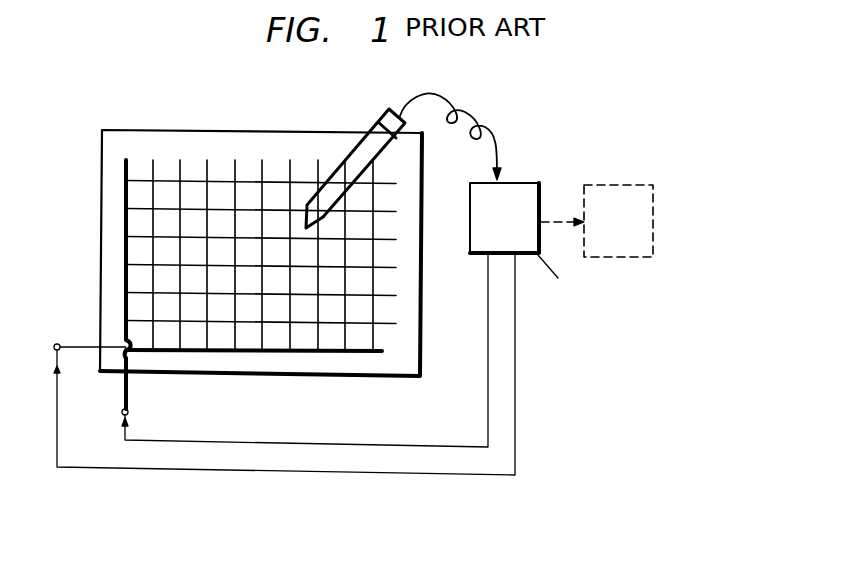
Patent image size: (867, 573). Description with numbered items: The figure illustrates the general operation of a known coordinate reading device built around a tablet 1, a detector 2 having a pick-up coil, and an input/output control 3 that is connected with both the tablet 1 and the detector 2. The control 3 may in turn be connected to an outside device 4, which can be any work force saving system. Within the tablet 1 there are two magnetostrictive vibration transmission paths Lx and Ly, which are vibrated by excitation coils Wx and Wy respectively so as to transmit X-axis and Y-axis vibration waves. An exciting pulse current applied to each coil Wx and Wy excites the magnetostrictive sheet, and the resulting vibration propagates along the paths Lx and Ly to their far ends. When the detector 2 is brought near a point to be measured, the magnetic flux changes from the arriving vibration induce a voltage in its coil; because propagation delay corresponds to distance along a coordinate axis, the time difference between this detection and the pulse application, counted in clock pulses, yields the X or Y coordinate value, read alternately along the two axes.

The tablet 1 is at (256, 250).
The detector 2 is at (380, 123).
The input/output control 3 is at (523, 190).
The outside device 4 is at (624, 192).
The magnetostrictive vibration transmission path Lx is at (388, 323).
The magnetostrictive vibration transmission path Ly is at (154, 165).
The excitation coil Wx is at (126, 253).
The excitation coil Wy is at (275, 353).